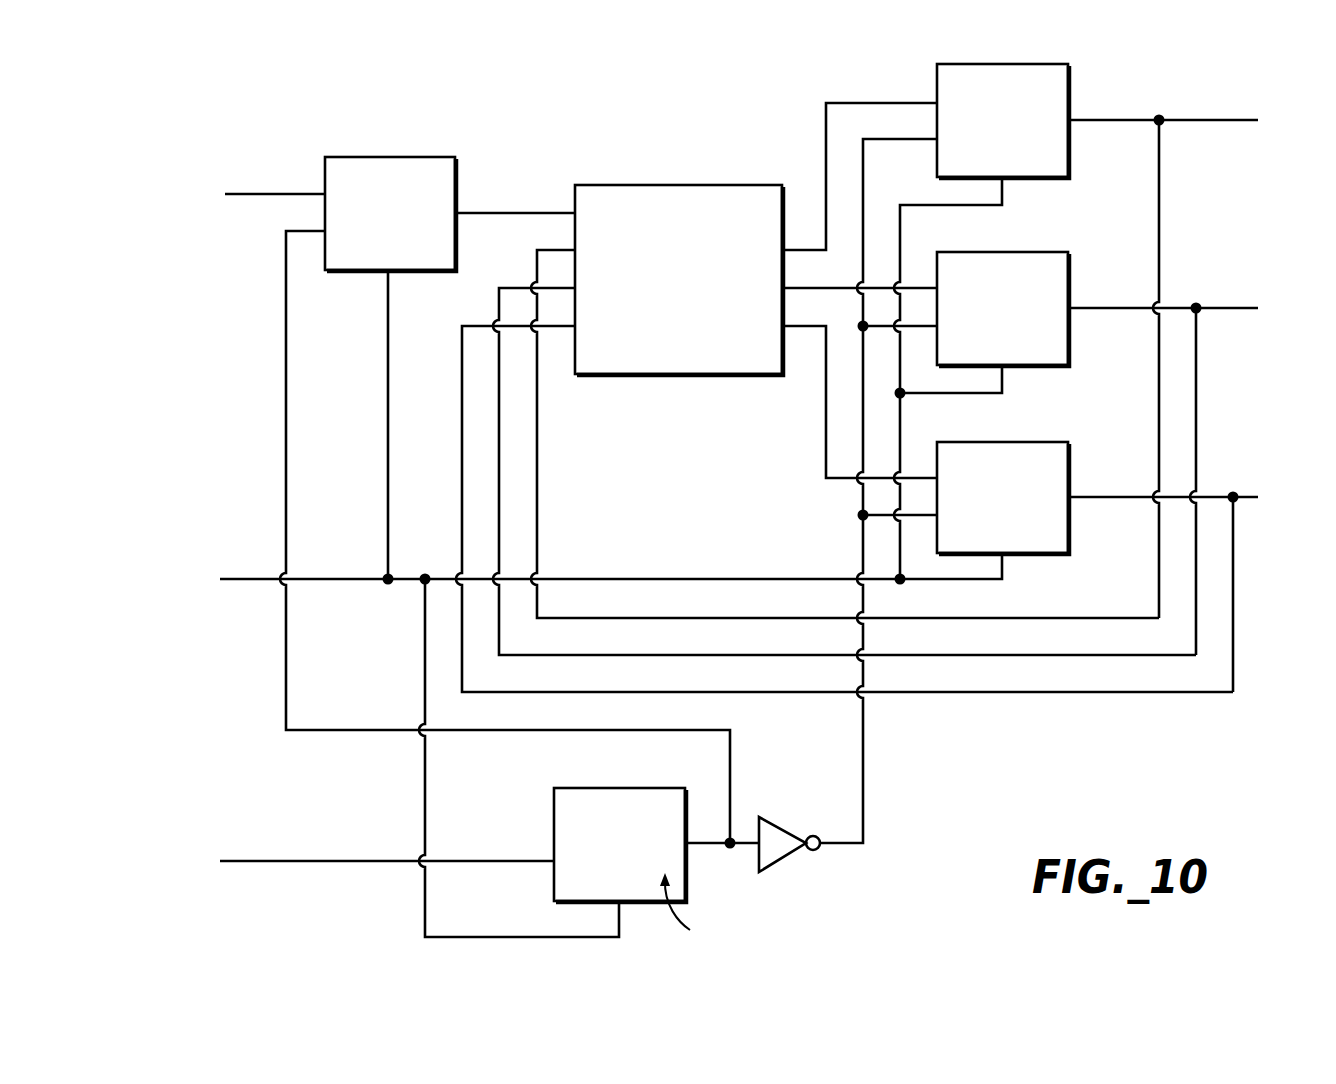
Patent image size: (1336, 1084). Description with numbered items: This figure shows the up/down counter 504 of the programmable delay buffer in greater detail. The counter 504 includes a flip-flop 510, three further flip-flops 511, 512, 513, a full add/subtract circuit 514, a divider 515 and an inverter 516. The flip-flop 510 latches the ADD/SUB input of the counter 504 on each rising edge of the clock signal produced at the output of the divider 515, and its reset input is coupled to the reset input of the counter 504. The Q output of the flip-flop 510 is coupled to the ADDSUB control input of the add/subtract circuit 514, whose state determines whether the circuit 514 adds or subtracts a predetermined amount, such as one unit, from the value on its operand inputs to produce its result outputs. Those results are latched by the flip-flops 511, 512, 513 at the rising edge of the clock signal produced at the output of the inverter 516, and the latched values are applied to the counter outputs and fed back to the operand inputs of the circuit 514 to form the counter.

The up/down counter 504 is at (270, 104).
The flip-flop 510 is at (385, 157).
The flip-flop 511 is at (1068, 93).
The flip-flop 512 is at (1068, 281).
The flip-flop 513 is at (1068, 471).
The full add/subtract circuit 514 is at (677, 374).
The divider 515 is at (613, 788).
The inverter 516 is at (770, 870).